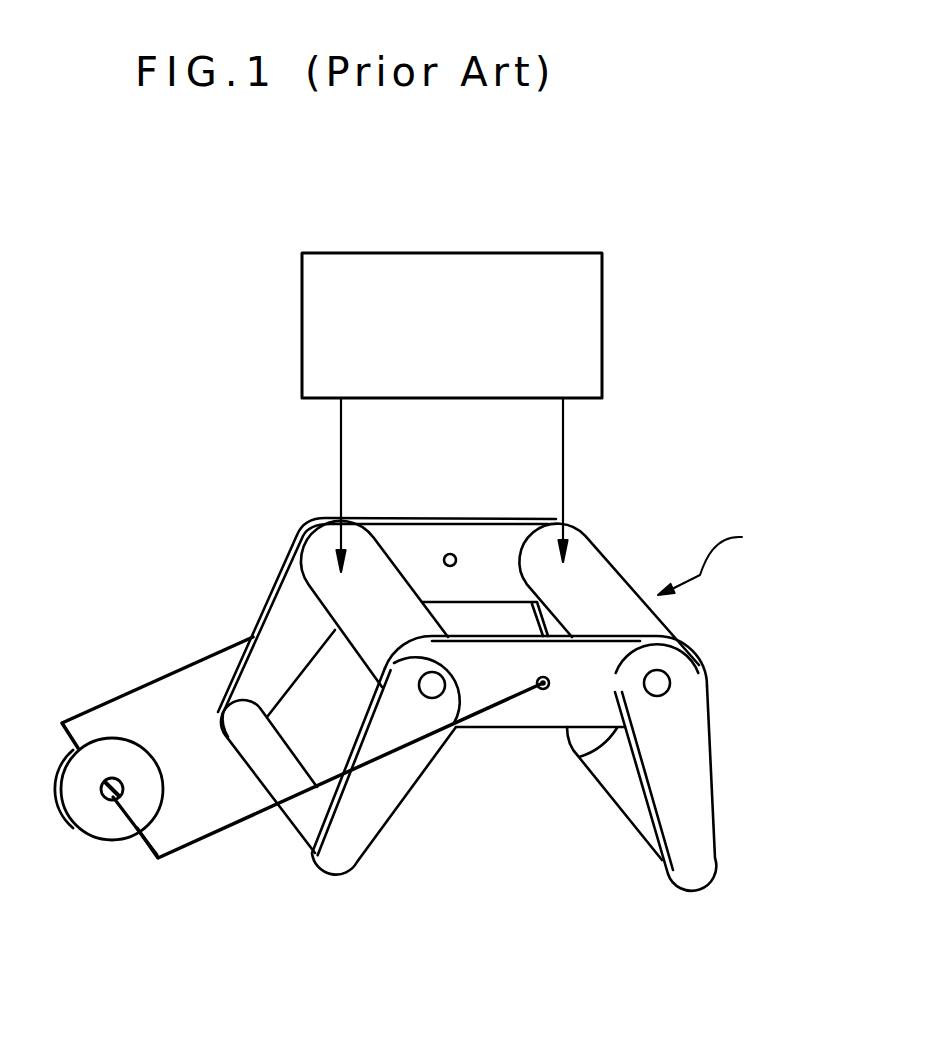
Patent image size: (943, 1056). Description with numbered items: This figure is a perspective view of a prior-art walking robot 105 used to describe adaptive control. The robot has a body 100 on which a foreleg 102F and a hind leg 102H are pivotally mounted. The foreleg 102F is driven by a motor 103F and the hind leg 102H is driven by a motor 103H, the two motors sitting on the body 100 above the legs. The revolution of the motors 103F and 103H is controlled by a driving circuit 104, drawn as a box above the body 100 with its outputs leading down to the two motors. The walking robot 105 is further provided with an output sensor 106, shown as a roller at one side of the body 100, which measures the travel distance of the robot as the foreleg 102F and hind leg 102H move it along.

The body 100 is at (433, 540).
The hind leg 102H is at (363, 823).
The foreleg 102F is at (698, 840).
The motor 103H is at (323, 557).
The motor 103F is at (597, 572).
The driving circuit 104 is at (595, 355).
The walking robot 105 is at (729, 557).
The output sensor 106 is at (105, 822).